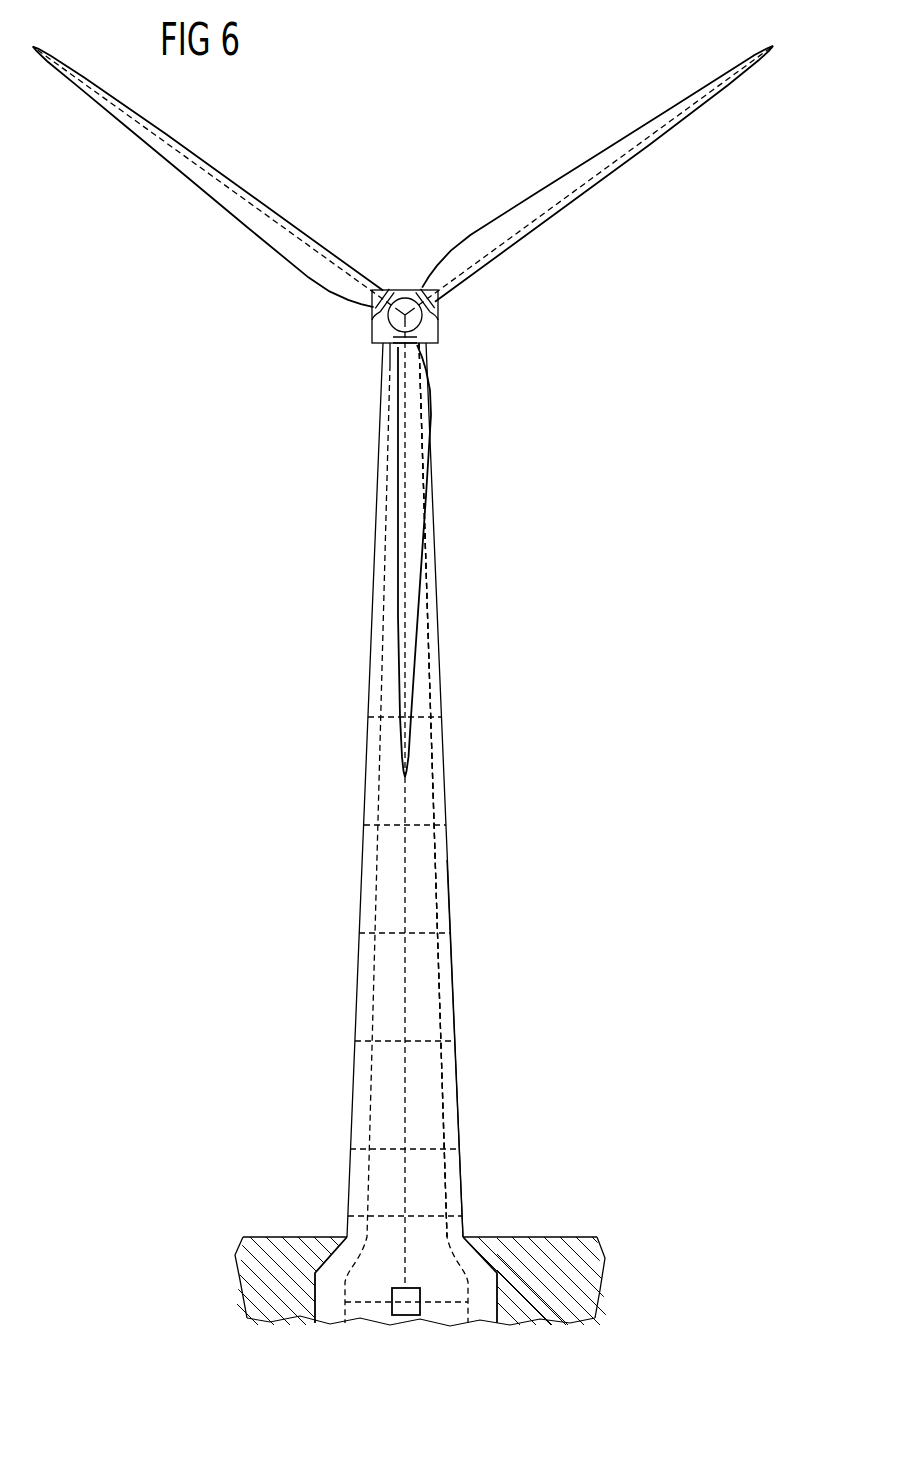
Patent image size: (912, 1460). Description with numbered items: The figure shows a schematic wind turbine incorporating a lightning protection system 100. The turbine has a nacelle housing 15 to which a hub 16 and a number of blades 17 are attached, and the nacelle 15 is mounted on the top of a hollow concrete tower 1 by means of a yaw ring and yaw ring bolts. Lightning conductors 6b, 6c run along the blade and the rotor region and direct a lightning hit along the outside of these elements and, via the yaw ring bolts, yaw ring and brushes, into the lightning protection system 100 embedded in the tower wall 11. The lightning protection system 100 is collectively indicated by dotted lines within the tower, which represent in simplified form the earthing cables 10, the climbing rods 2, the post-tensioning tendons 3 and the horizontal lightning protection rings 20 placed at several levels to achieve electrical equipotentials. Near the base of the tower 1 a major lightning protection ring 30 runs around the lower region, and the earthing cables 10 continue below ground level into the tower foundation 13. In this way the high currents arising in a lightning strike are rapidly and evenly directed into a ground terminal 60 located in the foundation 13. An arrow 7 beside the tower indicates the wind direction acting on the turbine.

The tower 1 is at (450, 885).
The climbing rods 2 is at (482, 790).
The tendons 3 is at (493, 790).
The lightning conductor 6b is at (296, 242).
The lightning conductor 6c is at (382, 331).
The wind direction 7 is at (580, 545).
The earthing cables 10 is at (437, 983).
The tower wall 11 is at (447, 1083).
The tower foundation 13 is at (472, 1262).
The nacelle housing 15 is at (430, 323).
The hub 16 is at (407, 300).
The blades 17 is at (243, 200).
The horizontal lightning protection rings 20 is at (425, 824).
The major lightning protection ring 30 is at (373, 1213).
The ground terminal 60 is at (412, 1303).
The lightning protection system 100 is at (437, 960).